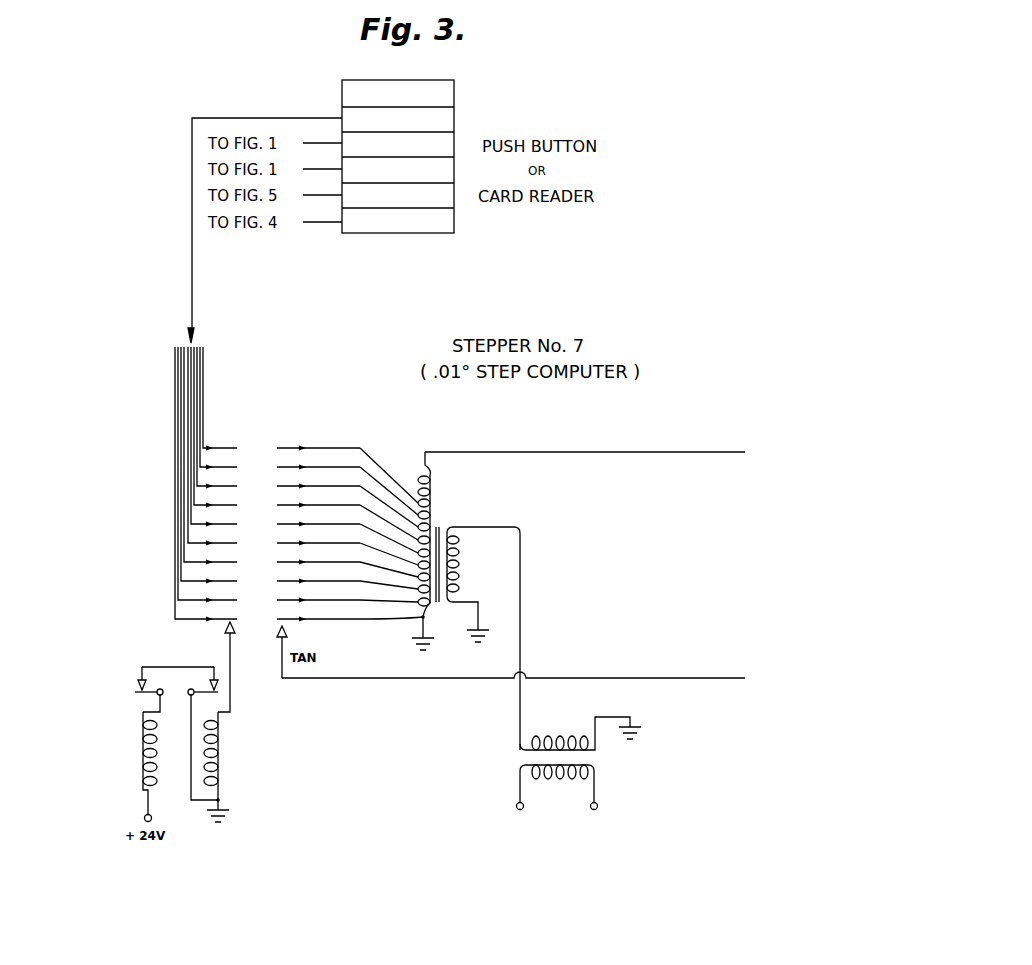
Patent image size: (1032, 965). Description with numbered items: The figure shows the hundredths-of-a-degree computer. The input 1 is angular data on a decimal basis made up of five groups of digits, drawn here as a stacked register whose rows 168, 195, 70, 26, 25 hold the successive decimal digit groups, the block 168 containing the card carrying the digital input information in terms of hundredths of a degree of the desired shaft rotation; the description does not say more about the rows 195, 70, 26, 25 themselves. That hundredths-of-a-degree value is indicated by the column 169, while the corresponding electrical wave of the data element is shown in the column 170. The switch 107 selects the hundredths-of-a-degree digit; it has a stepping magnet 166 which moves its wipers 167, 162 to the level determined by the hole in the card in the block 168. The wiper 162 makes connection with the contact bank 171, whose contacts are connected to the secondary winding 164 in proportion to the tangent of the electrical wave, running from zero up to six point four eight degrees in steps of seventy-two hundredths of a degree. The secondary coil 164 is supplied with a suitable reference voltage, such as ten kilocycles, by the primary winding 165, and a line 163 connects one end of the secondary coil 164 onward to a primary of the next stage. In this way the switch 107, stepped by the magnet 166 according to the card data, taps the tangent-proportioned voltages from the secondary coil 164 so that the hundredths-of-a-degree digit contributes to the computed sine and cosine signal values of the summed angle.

The input 1 is at (419, 169).
The block 168 is at (454, 113).
The .1 degree counter stage 195 is at (454, 141).
The 1 degree counter stage 70 is at (454, 170).
The 10 degree counter stage 26 is at (454, 206).
The 100 degree counter stage 25 is at (454, 231).
The column 169 is at (253, 445).
The contact bank 171 is at (302, 447).
The column 170 is at (336, 445).
The switch 107 is at (513, 624).
The line 163 is at (566, 456).
The secondary coil 164 is at (432, 490).
The primary winding 165 is at (457, 563).
The wiper 162 is at (288, 637).
The wiper 167 is at (224, 630).
The stepping magnet 166 is at (142, 783).